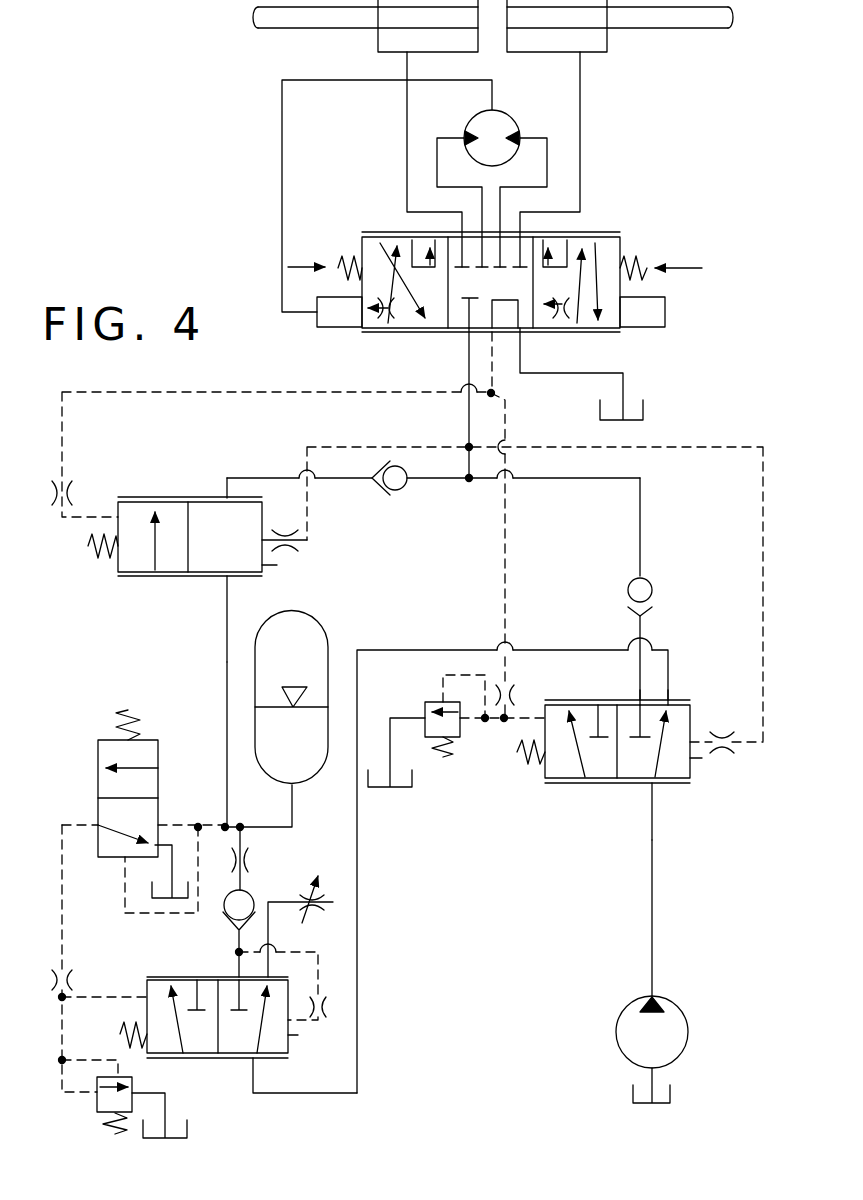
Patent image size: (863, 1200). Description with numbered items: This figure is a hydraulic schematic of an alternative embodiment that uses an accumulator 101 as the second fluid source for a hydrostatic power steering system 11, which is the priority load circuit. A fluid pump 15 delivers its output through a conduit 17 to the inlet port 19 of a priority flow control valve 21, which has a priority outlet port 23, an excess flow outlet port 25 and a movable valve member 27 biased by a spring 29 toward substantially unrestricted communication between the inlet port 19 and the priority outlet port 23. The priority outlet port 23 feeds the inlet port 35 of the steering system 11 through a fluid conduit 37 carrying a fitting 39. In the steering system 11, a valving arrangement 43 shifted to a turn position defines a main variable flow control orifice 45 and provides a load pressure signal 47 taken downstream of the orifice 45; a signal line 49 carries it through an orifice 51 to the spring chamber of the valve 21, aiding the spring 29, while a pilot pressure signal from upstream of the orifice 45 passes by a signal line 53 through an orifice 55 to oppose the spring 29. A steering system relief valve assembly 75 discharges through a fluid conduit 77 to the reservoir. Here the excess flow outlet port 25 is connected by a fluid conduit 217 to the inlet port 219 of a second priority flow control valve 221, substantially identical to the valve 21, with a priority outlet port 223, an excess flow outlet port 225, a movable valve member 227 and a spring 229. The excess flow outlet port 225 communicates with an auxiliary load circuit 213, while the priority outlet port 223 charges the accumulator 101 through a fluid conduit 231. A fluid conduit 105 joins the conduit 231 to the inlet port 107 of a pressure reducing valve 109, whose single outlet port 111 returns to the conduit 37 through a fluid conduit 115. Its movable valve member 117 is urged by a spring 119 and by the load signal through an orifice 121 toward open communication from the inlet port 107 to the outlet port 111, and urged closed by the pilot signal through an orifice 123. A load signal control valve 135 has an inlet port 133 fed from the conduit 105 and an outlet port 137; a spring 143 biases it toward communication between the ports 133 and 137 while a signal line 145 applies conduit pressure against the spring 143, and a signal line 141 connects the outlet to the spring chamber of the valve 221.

The hydrostatic power steering system 11 is at (615, 202).
The fluid pump 15 is at (671, 998).
The conduit 17 is at (653, 870).
The inlet port 19 is at (650, 785).
The priority flow control valve 21 is at (568, 790).
The priority outlet port 23 is at (640, 700).
The excess flow outlet port 25 is at (670, 702).
The movable valve member 27 is at (702, 758).
The spring 29 is at (522, 742).
The inlet port 35 is at (469, 334).
The fluid conduit 37 is at (643, 537).
The fitting 39 is at (469, 483).
The valving arrangement 43 is at (356, 238).
The variable flow control orifice 45 is at (373, 320).
The load pressure signal 47 is at (494, 377).
The signal line 49 is at (270, 392).
The orifice 51 is at (512, 697).
The signal line 53 is at (402, 445).
The orifice 55 is at (723, 732).
The steering system relief valve assembly 75 is at (426, 688).
The fluid conduit 77 is at (392, 745).
The accumulator 101 is at (335, 652).
The fluid conduit 105 is at (225, 662).
The inlet port 107 is at (227, 578).
The pressure reducing valve 109 is at (128, 590).
The outlet port 111 is at (227, 498).
The fluid conduit 115 is at (427, 482).
The movable valve member 117 is at (277, 565).
The spring 119 is at (88, 548).
The orifice 121 is at (70, 488).
The orifice 123 is at (287, 553).
The inlet port 133 is at (157, 825).
The load signal control valve 135 is at (174, 754).
The outlet port 137 is at (98, 825).
The signal line 141 is at (60, 910).
The spring 143 is at (127, 713).
The signal line 145 is at (125, 905).
The auxiliary load circuit 213 is at (304, 884).
The fluid conduit 217 is at (357, 912).
The inlet port 219 is at (253, 1062).
The priority flow control valve 221 is at (138, 988).
The priority outlet port 223 is at (238, 977).
The excess flow outlet port 225 is at (282, 982).
The movable valve member 227 is at (298, 1035).
The spring 229 is at (120, 1034).
The fluid conduit 231 is at (293, 810).